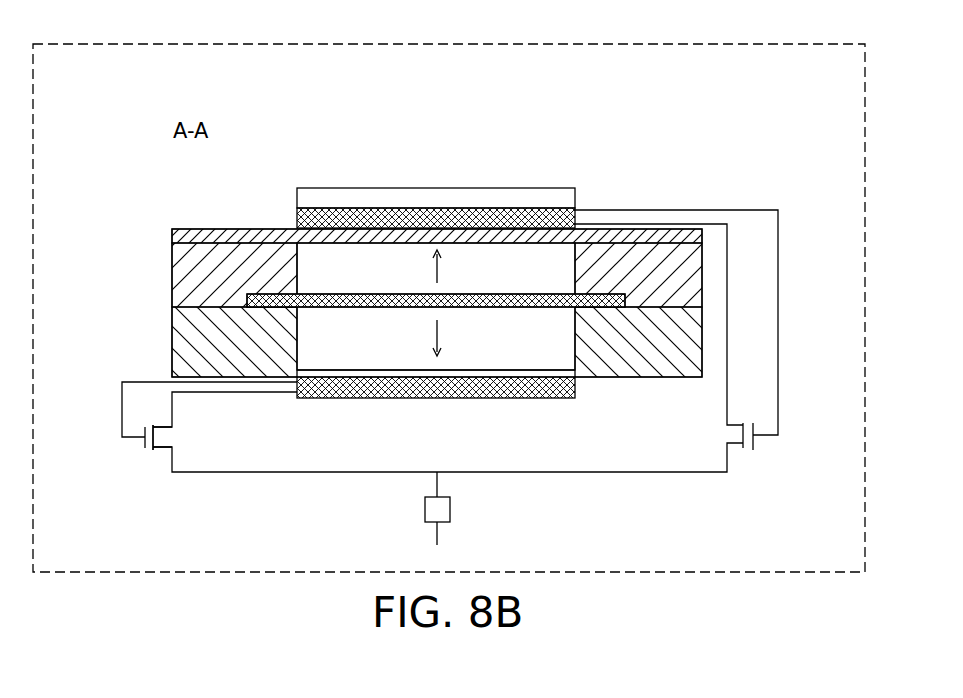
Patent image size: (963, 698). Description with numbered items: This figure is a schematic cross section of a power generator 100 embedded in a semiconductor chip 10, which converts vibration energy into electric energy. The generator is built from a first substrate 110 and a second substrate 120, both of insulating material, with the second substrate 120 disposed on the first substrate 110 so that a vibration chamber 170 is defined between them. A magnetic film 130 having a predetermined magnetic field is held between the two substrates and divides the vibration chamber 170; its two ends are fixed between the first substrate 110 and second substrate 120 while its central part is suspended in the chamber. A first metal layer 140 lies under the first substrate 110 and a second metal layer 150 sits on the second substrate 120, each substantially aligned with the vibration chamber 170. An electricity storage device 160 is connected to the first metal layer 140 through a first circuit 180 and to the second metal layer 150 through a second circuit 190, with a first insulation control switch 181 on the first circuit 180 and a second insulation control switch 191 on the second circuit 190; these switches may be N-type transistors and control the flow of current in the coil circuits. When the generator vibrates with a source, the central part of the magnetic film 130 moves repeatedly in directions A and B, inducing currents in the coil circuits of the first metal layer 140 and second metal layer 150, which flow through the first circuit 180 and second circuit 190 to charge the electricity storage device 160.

The semiconductor chip 10 is at (770, 43).
The power generator 100 is at (132, 101).
The first substrate 110 is at (172, 330).
The second substrate 120 is at (172, 258).
The magnetic film 130 is at (247, 301).
The first metal layer 140 is at (578, 391).
The second metal layer 150 is at (297, 215).
The electricity storage device 160 is at (450, 510).
The vibration chamber 170 is at (299, 355).
The first circuit 180 is at (122, 411).
The first insulation control switch 181 is at (152, 452).
The second circuit 190 is at (778, 320).
The second insulation control switch 191 is at (747, 450).